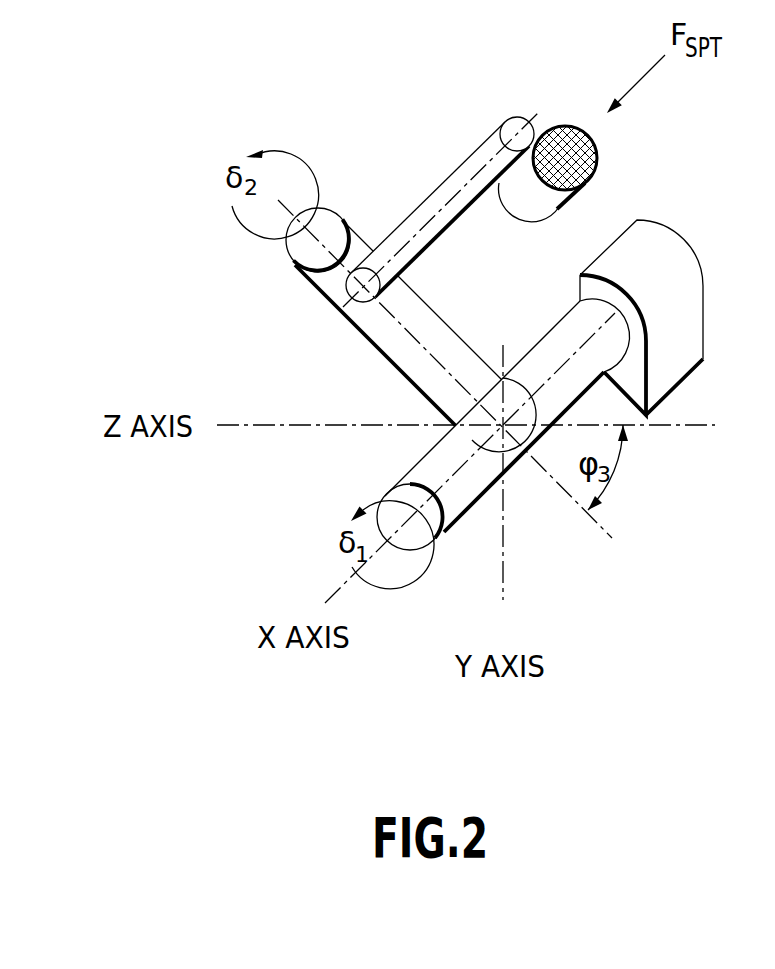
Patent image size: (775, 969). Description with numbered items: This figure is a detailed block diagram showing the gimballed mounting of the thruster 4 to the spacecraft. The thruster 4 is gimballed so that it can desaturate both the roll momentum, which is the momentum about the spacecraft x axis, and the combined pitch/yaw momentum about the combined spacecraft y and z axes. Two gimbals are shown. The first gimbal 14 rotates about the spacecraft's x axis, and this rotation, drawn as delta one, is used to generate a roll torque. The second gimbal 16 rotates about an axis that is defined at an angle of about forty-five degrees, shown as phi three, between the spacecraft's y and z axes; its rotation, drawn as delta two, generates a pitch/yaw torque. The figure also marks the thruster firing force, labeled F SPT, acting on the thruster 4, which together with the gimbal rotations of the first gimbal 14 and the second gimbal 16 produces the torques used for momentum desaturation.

The thruster 4 is at (366, 333).
The first gimbal 14 is at (413, 465).
The second gimbal 16 is at (321, 290).